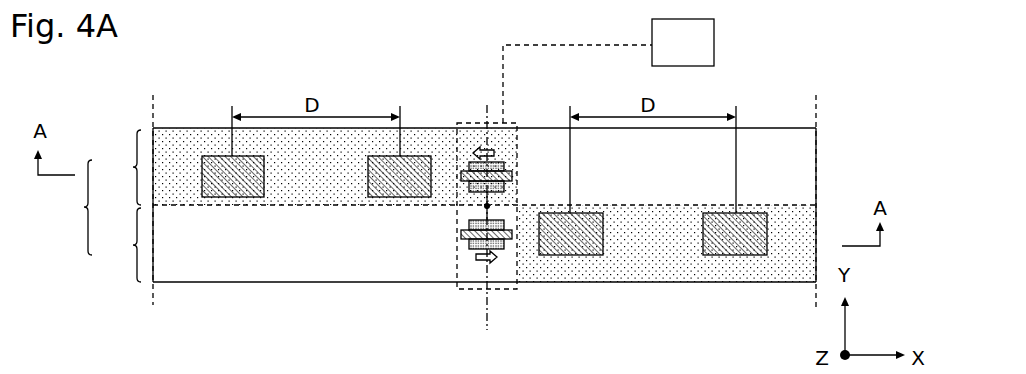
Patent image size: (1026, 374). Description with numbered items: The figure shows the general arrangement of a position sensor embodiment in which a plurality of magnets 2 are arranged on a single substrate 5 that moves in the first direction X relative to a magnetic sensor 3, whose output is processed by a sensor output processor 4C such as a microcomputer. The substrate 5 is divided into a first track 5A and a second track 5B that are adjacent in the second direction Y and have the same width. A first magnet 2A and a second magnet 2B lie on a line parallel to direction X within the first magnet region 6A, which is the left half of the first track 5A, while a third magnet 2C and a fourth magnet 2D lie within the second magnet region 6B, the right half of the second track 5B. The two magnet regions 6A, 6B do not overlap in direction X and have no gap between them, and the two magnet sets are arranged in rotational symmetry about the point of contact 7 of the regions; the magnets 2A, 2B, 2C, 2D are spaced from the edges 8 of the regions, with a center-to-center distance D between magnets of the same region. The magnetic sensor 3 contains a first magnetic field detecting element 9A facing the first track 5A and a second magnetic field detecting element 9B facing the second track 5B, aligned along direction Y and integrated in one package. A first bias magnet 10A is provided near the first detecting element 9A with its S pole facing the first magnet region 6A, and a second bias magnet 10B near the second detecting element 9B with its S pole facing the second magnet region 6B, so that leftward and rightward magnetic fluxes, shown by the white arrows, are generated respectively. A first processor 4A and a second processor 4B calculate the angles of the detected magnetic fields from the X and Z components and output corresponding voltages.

The magnets 2 is at (484, 240).
The first magnet 2A is at (228, 197).
The second magnet 2B is at (385, 197).
The third magnet 2C is at (572, 255).
The fourth magnet 2D is at (733, 255).
The magnetic sensor 3 is at (486, 100).
The first processor 4A is at (457, 141).
The second processor 4B is at (461, 272).
The sensor output processor 4C is at (700, 42).
The substrate 5 is at (439, 205).
The first track 5A is at (455, 166).
The second track 5B is at (455, 243).
The first magnet region 6A is at (326, 188).
The second magnet region 6B is at (660, 253).
The point of contact 7 is at (489, 206).
The edges 8 is at (484, 228).
The first magnetic field detecting element 9A is at (466, 168).
The second magnetic field detecting element 9B is at (468, 245).
The first bias magnet 10A is at (497, 162).
The second bias magnet 10B is at (497, 250).